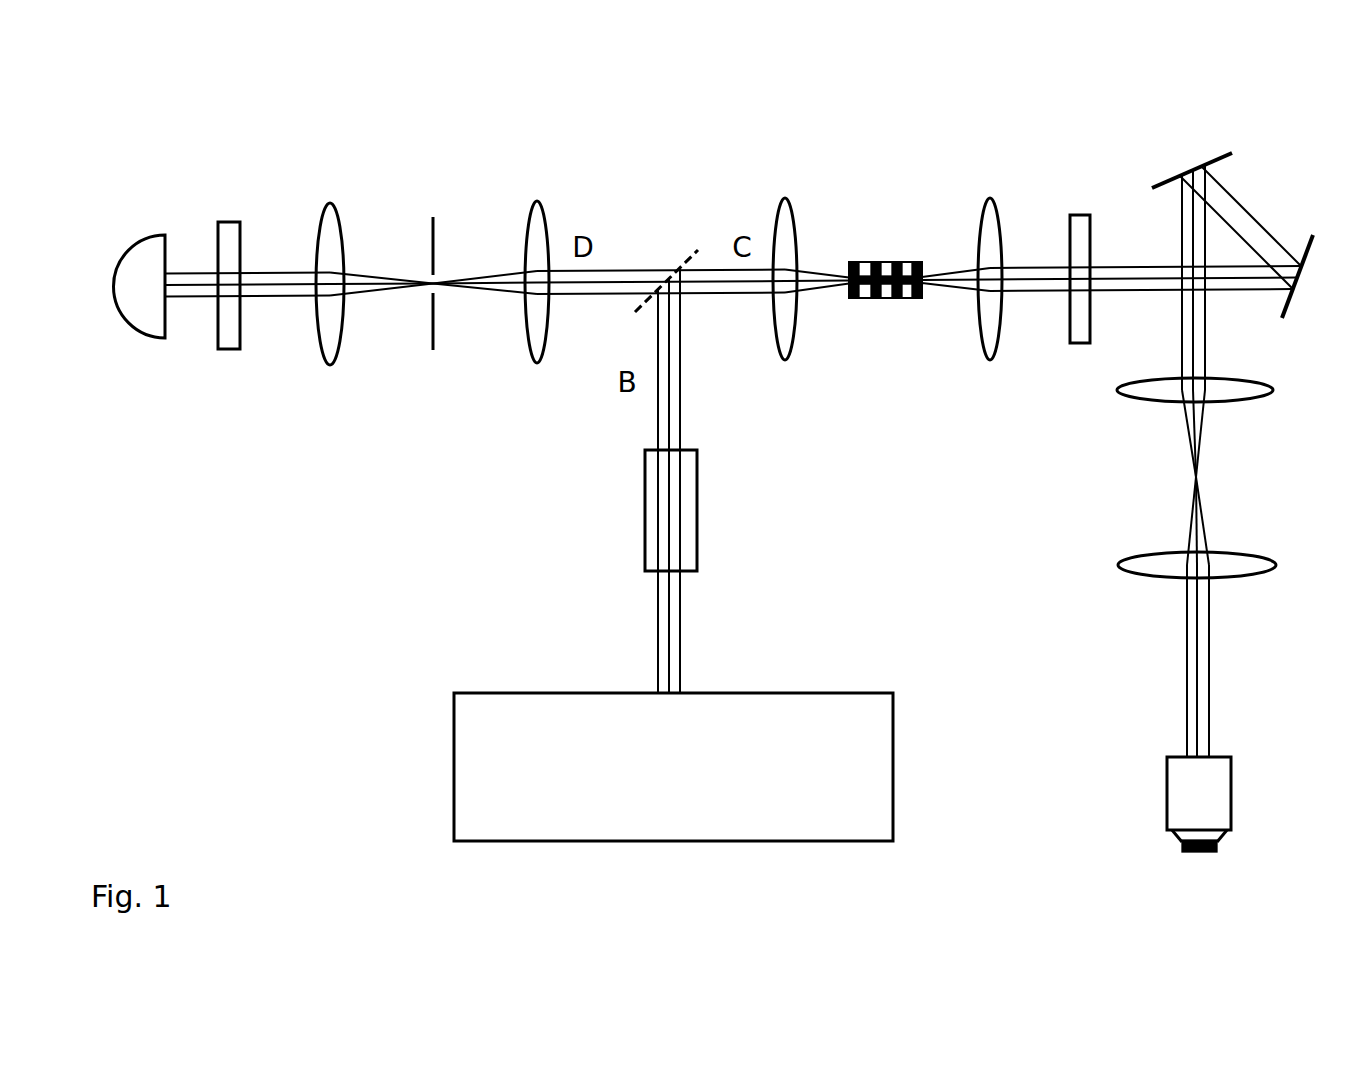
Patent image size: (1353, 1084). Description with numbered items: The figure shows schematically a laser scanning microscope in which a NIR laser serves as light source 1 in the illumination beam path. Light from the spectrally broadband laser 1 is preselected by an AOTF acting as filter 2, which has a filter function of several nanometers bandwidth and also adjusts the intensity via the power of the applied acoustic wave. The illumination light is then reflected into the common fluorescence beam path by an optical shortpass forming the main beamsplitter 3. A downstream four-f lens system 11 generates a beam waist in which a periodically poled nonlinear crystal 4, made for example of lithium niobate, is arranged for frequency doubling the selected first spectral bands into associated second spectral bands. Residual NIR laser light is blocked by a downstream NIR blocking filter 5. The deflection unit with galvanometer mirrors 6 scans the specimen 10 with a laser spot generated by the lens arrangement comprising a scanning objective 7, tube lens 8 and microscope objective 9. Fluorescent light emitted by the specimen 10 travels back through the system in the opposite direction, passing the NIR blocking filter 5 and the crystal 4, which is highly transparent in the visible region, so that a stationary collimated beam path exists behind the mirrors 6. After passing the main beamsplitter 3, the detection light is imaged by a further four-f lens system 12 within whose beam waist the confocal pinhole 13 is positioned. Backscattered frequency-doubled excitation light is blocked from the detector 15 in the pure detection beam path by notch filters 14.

The light source 1 is at (664, 788).
The filter 2 is at (644, 500).
The main beamsplitter 3 is at (687, 258).
The periodically poled nonlinear crystal 4 is at (878, 300).
The NIR blocking filter 5 is at (1080, 214).
The galvanometer mirrors 6 is at (1218, 158).
The scanning objective 7 is at (1258, 398).
The tube lens 8 is at (1256, 575).
The microscope objective 9 is at (1232, 826).
The specimen 10 is at (1196, 856).
The 4f lens system 11 is at (780, 356).
The further 4f lens system 12 is at (322, 212).
The confocal pinhole 13 is at (428, 342).
The notch filters 14 is at (215, 232).
The detector 15 is at (122, 328).